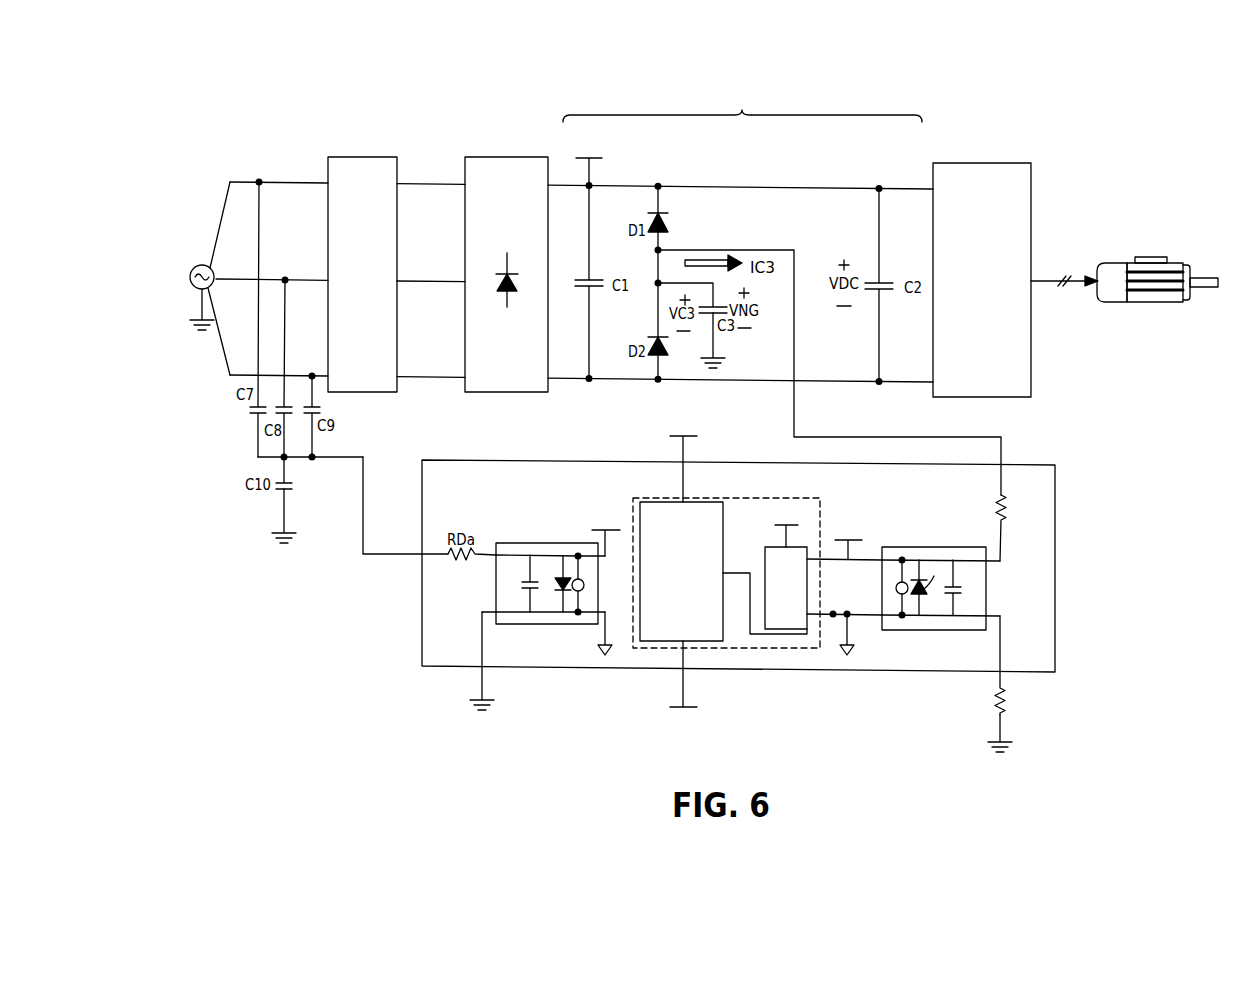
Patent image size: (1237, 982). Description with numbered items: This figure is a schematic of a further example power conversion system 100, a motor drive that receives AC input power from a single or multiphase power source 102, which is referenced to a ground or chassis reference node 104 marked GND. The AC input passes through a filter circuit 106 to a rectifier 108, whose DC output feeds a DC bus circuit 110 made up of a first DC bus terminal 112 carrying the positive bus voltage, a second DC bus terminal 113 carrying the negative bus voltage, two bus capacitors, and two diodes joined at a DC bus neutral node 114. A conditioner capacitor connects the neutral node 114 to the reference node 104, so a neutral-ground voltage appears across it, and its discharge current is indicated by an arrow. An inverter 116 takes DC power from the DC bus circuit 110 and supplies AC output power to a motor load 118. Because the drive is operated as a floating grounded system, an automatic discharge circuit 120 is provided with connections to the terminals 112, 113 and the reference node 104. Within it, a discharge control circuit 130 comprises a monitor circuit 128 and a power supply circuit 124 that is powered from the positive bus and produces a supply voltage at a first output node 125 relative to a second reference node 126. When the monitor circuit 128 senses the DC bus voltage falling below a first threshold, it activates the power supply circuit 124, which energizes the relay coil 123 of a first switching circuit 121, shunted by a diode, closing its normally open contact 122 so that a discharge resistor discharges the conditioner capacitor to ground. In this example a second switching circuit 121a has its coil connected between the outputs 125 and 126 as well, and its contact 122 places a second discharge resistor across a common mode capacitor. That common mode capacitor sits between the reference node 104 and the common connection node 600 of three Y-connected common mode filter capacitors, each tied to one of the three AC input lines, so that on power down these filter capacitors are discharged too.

The power conversion system 100 is at (269, 116).
The power source 102 is at (207, 263).
The reference node 104 is at (202, 307).
The filter circuit 106 is at (361, 157).
The rectifier 108 is at (501, 157).
The DC bus circuit 110 is at (700, 111).
The first DC bus terminal 112 is at (590, 175).
The second DC bus terminal 113 is at (590, 393).
The DC bus neutral node 114 is at (655, 274).
The inverter 116 is at (981, 161).
The motor load 118 is at (1114, 263).
The discharge circuit 120 is at (797, 463).
The switching circuit 121 is at (935, 547).
The second switching circuit 121a is at (545, 543).
The contact 122 is at (507, 586).
The relay coil 123 is at (891, 584).
The power supply circuit 124 is at (798, 607).
The first output node 125 is at (601, 545).
The second reference node 126 is at (604, 641).
The monitor circuit 128 is at (694, 594).
The discharge control circuit 130 is at (670, 499).
The common connection node 600 is at (350, 457).